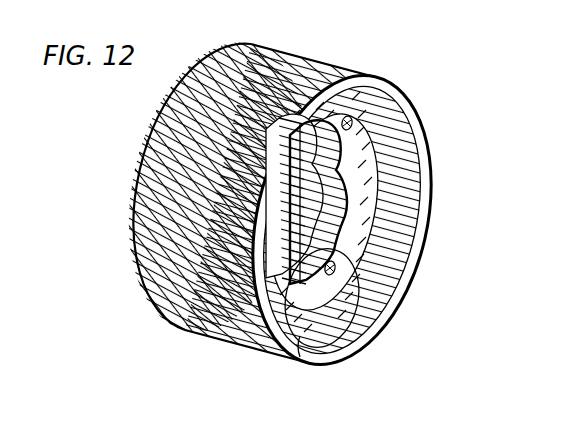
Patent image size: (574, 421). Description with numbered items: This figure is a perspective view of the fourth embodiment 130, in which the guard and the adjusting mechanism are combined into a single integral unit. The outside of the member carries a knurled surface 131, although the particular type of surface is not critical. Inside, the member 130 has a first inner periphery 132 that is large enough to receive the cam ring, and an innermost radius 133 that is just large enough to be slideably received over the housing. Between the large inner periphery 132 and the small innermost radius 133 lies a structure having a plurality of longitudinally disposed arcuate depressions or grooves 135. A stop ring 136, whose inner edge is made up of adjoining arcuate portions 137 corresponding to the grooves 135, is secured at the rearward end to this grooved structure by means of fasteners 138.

The fourth embodiment 130 is at (295, 205).
The knurled surface 131 is at (262, 57).
The first inner periphery 132 is at (398, 147).
The innermost radius 133 is at (300, 357).
The arcuate depressions or grooves 135 is at (380, 311).
The stop ring 136 is at (368, 222).
The adjoining arcuate portions 137 is at (332, 357).
The fasteners 138 is at (350, 120).